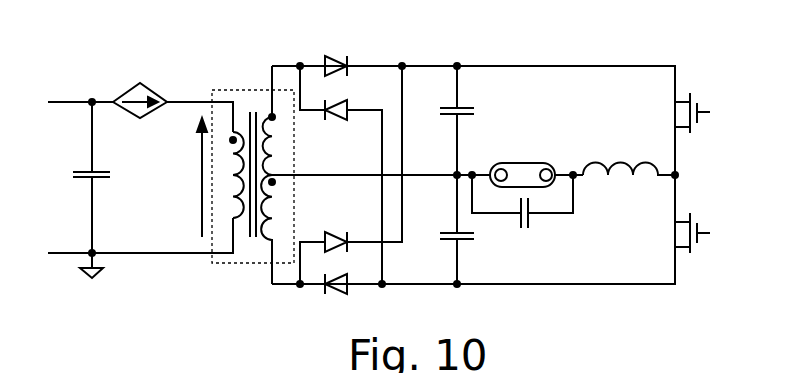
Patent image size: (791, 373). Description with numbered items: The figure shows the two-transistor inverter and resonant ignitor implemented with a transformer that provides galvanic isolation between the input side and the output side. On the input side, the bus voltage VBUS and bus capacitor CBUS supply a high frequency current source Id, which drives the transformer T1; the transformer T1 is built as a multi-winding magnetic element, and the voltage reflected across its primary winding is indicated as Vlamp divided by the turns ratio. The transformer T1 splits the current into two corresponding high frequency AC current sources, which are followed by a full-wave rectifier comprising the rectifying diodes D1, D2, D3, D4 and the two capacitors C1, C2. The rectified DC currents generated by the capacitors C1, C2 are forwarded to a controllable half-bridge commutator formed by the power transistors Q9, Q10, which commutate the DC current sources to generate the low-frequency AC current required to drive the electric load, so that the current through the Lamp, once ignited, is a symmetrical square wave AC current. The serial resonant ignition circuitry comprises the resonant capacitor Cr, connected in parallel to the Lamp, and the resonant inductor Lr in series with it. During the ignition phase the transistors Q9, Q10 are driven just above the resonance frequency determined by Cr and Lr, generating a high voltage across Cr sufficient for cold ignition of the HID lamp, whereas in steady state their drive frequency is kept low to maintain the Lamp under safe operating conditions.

The bus voltage VBUS is at (62, 82).
The high frequency current source Id is at (127, 85).
The bus capacitor CBUS is at (64, 177).
The reflected lamp voltage Vlamp is at (197, 213).
The transformer T1 is at (255, 163).
The rectifying diode D1 is at (321, 51).
The rectifying diode D2 is at (341, 175).
The rectifying diode D3 is at (351, 175).
The rectifying diode D4 is at (317, 303).
The capacitor C1 is at (441, 120).
The capacitor C2 is at (441, 229).
The lamp Lamp is at (527, 157).
The resonant capacitor Cr is at (522, 215).
The resonant inductor Lr is at (629, 145).
The power transistor Q9 is at (713, 103).
The power transistor Q10 is at (720, 223).